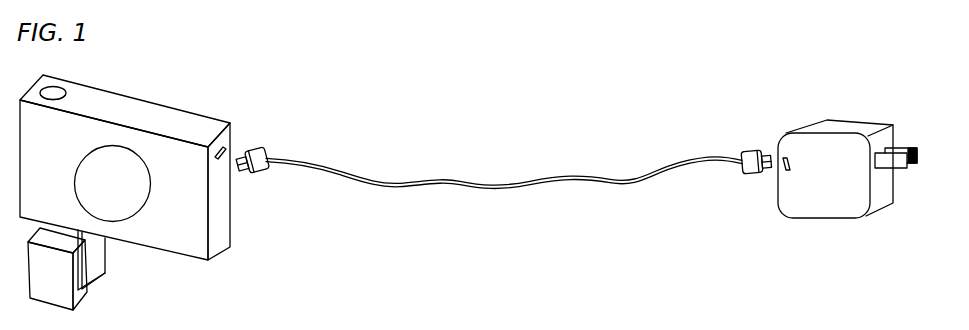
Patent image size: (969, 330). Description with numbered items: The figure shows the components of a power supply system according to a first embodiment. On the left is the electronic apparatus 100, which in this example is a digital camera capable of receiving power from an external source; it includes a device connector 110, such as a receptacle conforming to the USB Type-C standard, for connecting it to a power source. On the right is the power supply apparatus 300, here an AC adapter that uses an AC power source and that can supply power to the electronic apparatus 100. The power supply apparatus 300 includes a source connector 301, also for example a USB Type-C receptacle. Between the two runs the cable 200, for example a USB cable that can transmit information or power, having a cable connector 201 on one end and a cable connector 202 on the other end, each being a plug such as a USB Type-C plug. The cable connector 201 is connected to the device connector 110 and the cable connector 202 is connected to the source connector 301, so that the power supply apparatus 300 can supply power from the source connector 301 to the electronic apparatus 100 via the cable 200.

The electronic apparatus 100 is at (143, 99).
The device connector 110 is at (217, 158).
The cable 200 is at (332, 170).
The cable connector 201 is at (262, 150).
The cable connector 202 is at (755, 175).
The power supply apparatus 300 is at (850, 118).
The source connector 301 is at (786, 156).